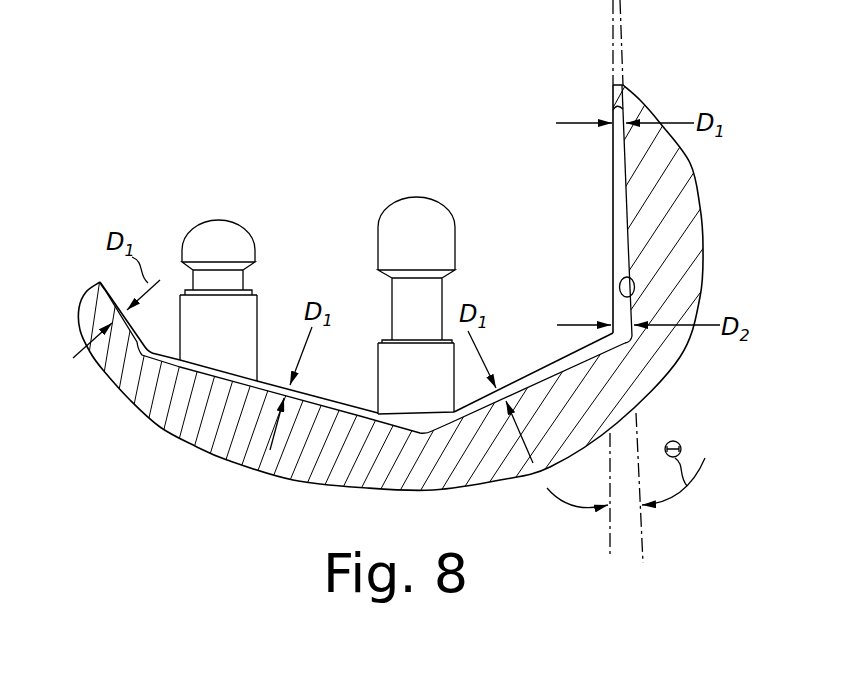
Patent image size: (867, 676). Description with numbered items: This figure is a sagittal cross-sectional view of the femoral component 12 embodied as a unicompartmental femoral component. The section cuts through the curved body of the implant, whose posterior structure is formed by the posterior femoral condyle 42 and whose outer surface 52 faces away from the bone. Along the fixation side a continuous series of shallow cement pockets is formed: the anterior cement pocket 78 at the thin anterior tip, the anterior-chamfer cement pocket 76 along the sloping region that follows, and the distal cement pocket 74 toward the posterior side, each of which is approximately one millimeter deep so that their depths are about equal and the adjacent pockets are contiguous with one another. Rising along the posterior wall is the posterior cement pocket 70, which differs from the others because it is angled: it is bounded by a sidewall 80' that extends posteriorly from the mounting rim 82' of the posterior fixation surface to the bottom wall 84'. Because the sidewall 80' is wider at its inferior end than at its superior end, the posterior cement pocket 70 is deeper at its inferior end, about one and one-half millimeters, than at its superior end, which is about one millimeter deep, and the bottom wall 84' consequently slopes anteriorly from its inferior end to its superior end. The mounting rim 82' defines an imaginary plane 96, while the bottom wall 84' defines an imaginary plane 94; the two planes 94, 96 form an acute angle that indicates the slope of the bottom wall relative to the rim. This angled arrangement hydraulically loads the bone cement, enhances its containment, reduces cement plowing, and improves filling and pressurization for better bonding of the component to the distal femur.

The femoral component 12 is at (157, 97).
The posterior femoral condyle 42 is at (697, 220).
The outer surface 52 is at (700, 183).
The posterior cement pocket 70 is at (618, 223).
The distal cement pocket 74 is at (530, 380).
The anterior-chamfer cement pocket 76 is at (342, 407).
The anterior cement pocket 78 is at (132, 336).
The sidewall 80' is at (594, 291).
The mounting rim 82' is at (585, 149).
The bottom wall 84' is at (687, 280).
The imaginary plane 94 is at (645, 538).
The imaginary plane 96 is at (607, 533).